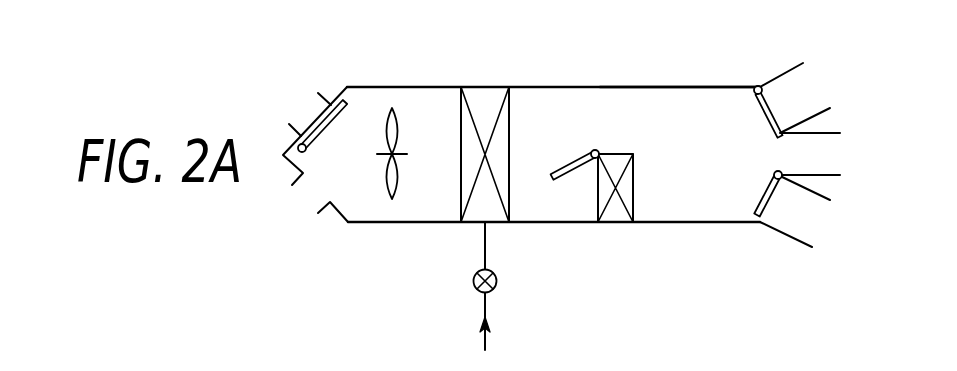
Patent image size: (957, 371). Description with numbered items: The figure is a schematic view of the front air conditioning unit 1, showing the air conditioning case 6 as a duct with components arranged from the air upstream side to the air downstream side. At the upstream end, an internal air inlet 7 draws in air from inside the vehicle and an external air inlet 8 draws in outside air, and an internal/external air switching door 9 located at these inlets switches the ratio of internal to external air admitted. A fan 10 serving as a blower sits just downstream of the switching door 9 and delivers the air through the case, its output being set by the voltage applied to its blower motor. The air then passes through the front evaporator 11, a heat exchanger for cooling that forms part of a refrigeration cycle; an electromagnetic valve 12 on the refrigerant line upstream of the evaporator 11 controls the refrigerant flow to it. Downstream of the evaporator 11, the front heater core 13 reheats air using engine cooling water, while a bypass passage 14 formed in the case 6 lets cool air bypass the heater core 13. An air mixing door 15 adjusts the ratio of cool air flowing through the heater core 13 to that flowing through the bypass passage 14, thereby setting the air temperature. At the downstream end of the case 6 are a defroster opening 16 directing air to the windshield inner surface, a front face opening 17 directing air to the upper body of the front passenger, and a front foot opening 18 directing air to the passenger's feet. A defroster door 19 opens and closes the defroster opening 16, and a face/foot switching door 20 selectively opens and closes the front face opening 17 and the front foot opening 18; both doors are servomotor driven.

The front air conditioning unit 1 is at (323, 78).
The air conditioning case 6 is at (572, 90).
The internal air inlet 7 is at (308, 118).
The external air inlet 8 is at (312, 197).
The internal/external air switching door 9 is at (347, 113).
The fan 10 is at (393, 108).
The front evaporator 11 is at (488, 93).
The electromagnetic valve 12 is at (473, 280).
The front heater core 13 is at (633, 200).
The bypass passage 14 is at (647, 95).
The air mixing door 15 is at (557, 182).
The defroster opening 16 is at (807, 90).
The front face opening 17 is at (825, 153).
The front foot opening 18 is at (805, 217).
The defroster door 19 is at (755, 103).
The face/foot switching door 20 is at (757, 203).